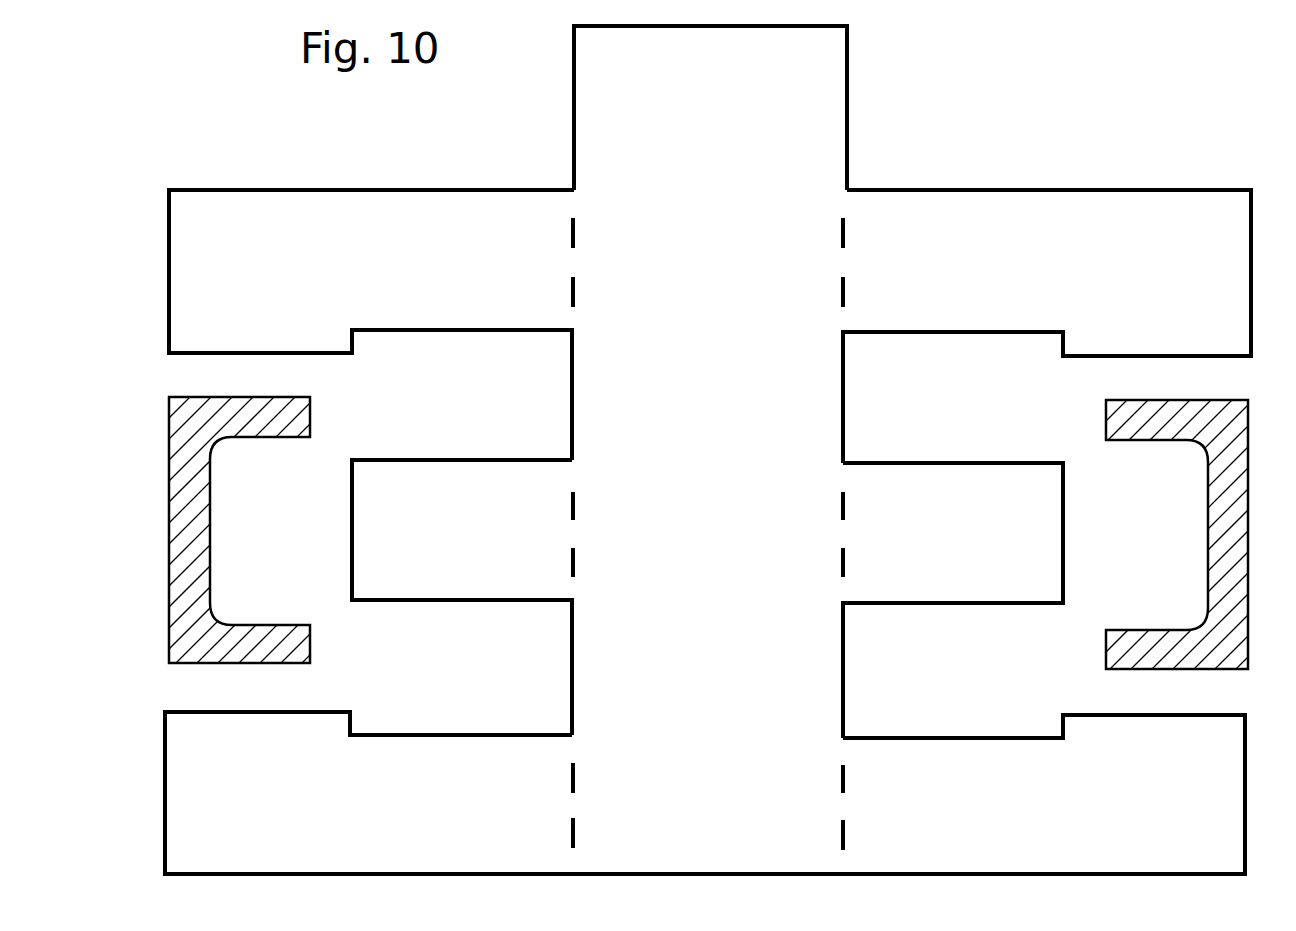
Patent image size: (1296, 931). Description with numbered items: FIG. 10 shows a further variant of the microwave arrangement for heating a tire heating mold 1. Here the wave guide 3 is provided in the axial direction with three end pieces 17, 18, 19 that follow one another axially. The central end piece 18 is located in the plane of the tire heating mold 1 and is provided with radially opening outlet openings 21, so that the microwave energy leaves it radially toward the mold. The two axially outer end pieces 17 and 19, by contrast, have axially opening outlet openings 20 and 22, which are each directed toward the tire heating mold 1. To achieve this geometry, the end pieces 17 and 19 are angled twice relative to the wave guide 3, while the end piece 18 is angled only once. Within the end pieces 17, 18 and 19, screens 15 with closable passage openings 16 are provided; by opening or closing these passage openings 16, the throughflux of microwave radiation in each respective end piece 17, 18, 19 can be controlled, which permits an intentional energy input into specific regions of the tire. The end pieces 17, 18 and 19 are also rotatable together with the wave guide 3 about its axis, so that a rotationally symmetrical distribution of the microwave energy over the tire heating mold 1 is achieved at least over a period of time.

The tire heating mold 1 is at (178, 529).
The wave guide 3 is at (832, 88).
The screens 15 is at (573, 232).
The closable passage openings 16 is at (575, 261).
The end piece 17 is at (378, 217).
The end piece 18 is at (444, 494).
The end piece 19 is at (444, 763).
The axially opening outlet opening 20 is at (316, 355).
The radially opening outlet openings 21 is at (352, 529).
The axially opening outlet opening 22 is at (336, 710).